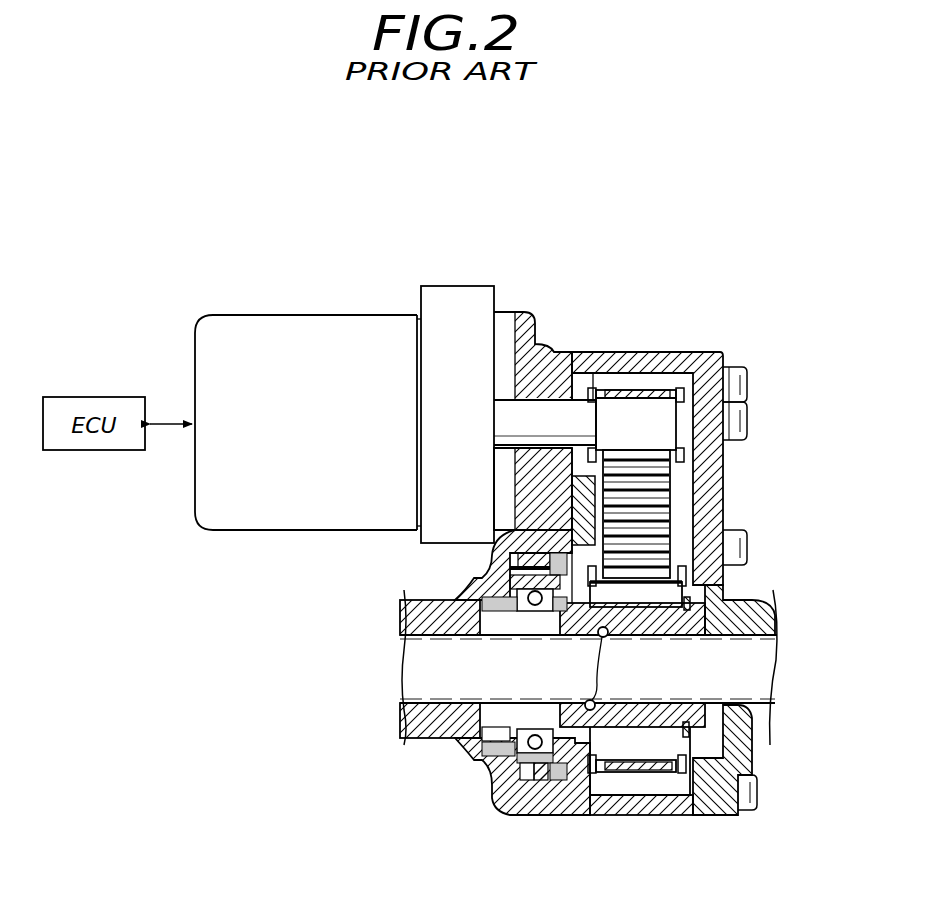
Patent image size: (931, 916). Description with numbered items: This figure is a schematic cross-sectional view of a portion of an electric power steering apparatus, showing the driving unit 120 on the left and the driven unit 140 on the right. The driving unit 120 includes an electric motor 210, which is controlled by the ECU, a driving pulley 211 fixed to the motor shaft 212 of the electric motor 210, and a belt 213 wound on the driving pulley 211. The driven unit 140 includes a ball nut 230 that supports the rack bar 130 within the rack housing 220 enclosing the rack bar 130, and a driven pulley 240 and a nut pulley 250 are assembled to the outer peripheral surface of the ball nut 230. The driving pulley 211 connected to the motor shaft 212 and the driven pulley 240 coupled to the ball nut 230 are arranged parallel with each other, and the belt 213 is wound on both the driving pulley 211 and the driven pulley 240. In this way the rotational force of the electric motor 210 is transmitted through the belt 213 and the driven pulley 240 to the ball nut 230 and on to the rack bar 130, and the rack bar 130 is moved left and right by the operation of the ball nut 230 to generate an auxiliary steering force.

The driving unit 120 is at (226, 294).
The electric motor 210 is at (308, 328).
The motor shaft 212 is at (540, 405).
The driving pulley 211 is at (634, 405).
The belt 213 is at (670, 521).
The ball nut 230 is at (738, 615).
The rack bar 130 is at (750, 678).
The rack housing 220 is at (588, 778).
The driven pulley 240 is at (645, 750).
The nut pulley 250 is at (532, 778).
The driven unit 140 is at (736, 826).